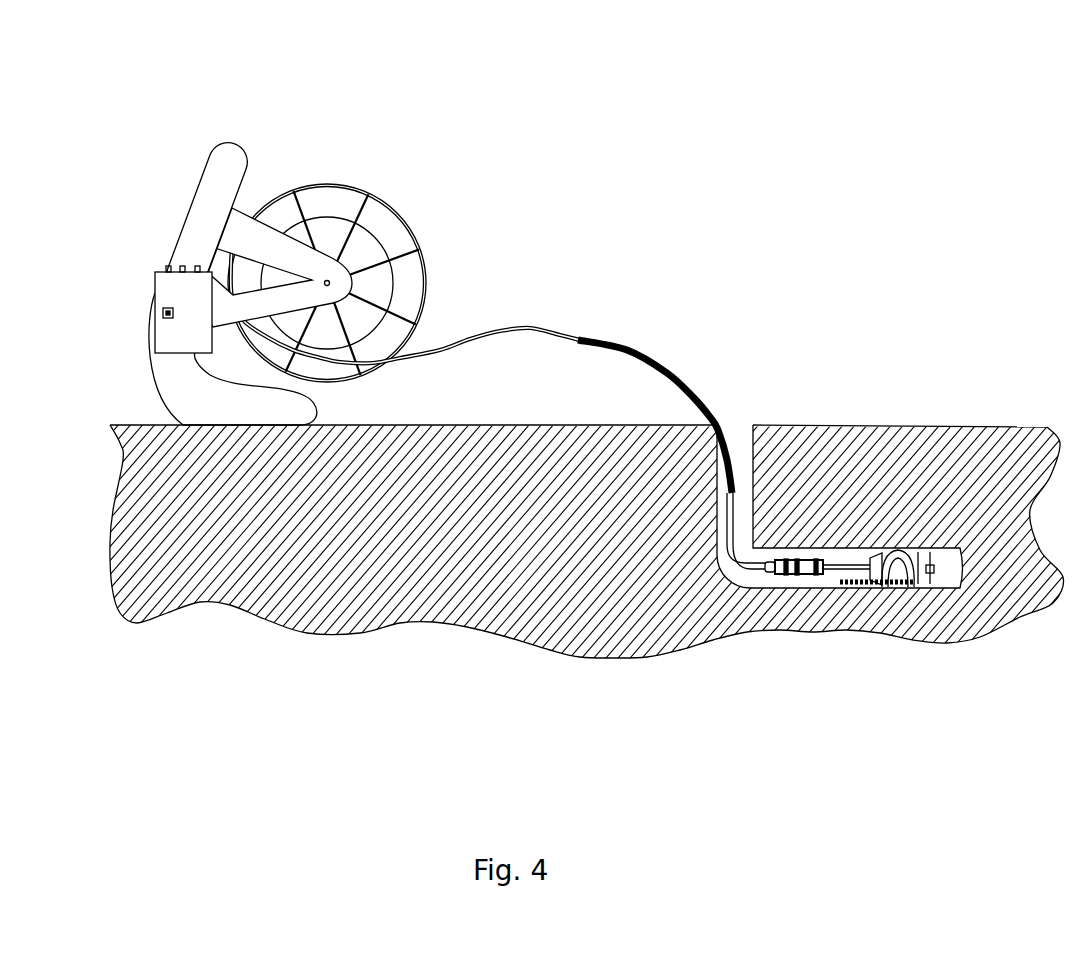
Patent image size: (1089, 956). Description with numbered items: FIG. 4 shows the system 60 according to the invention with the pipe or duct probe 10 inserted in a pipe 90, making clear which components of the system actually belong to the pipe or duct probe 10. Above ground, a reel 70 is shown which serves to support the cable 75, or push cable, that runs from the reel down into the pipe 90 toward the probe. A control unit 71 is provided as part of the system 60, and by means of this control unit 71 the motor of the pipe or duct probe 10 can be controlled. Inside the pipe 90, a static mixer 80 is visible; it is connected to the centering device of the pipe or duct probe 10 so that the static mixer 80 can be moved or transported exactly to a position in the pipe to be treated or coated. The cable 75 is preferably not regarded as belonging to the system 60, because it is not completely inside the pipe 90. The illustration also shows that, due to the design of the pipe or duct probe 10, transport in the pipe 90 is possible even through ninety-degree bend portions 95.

The system 60 is at (703, 113).
The reel 70 is at (340, 183).
The control unit 71 is at (175, 292).
The cable 75 is at (489, 330).
The pipe or duct probe 10 is at (819, 536).
The static mixer 80 is at (870, 582).
The pipe 90 is at (782, 580).
The 90° bend portions 95 is at (732, 582).